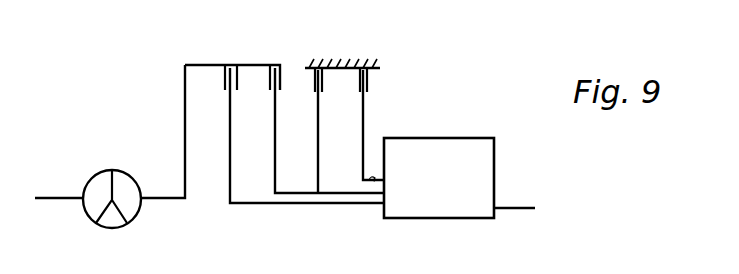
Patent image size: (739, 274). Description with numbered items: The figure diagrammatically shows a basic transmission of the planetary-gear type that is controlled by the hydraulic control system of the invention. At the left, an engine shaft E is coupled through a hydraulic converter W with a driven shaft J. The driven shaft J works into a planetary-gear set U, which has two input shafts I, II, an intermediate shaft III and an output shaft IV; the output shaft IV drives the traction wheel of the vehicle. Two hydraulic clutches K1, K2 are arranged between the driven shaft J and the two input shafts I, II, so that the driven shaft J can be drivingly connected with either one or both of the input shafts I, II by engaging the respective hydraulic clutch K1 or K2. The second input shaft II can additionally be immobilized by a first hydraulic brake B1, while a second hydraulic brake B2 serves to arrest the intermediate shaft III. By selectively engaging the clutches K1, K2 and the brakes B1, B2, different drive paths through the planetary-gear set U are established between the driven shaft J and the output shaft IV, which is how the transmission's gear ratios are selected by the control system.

The hydraulic converter W is at (105, 170).
The engine shaft E is at (52, 199).
The driven shaft J is at (166, 199).
The hydraulic clutch K1 is at (231, 67).
The hydraulic clutch K2 is at (276, 67).
The first hydraulic brake B1 is at (320, 67).
The second hydraulic brake B2 is at (364, 67).
The input shaft I is at (259, 204).
The input shaft II is at (300, 196).
The intermediate shaft III is at (376, 183).
The planetary-gear set U is at (439, 178).
The output shaft IV is at (519, 208).